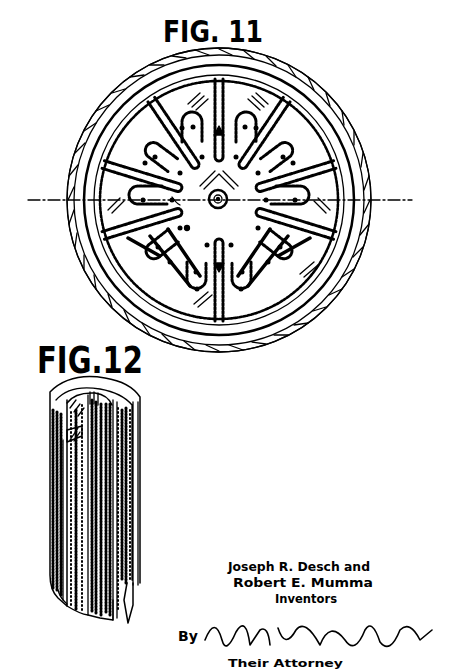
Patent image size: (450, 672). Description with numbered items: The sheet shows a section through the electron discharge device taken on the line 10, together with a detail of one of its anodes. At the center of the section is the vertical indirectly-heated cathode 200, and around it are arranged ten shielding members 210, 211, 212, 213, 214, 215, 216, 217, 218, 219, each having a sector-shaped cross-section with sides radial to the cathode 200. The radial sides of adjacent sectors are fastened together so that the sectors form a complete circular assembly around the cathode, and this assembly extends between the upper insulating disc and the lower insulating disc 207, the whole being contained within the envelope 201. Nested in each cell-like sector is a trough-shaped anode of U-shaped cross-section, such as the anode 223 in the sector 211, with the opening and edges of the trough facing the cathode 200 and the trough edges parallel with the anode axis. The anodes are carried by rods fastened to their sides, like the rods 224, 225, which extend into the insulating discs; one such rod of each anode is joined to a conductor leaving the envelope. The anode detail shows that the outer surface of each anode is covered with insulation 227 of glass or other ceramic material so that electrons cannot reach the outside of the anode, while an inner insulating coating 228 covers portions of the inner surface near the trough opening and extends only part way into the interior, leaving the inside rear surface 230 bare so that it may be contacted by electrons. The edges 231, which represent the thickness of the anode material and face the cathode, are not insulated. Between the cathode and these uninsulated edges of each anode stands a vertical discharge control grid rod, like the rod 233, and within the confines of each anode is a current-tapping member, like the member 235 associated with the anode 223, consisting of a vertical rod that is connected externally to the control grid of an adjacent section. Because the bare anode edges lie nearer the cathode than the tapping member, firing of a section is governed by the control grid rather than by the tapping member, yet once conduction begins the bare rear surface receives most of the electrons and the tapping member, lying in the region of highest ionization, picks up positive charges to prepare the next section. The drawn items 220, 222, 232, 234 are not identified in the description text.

In FIG. 11, the section line 10 is at (44, 210).
In FIG. 11, the cathode 200 is at (233, 185).
In FIG. 11, the envelope 201 is at (360, 258).
In FIG. 12, the envelope 201 is at (0, 495).
In FIG. 11, the lower insulating disc 207 is at (285, 308).
In FIG. 11, the shielding member 210 is at (112, 286).
In FIG. 11, the shielding member 211 is at (86, 277).
In FIG. 11, the shielding member 212 is at (123, 127).
In FIG. 11, the shielding member 213 is at (172, 91).
In FIG. 11, the shielding member 214 is at (275, 91).
In FIG. 11, the shielding member 215 is at (325, 134).
In FIG. 11, the shielding member 216 is at (368, 168).
In FIG. 11, the shielding member 217 is at (354, 282).
In FIG. 11, the shielding member 218 is at (251, 308).
In FIG. 11, the shielding member 219 is at (190, 323).
In FIG. 11, the tube outline 220 is at (208, 323).
In FIG. 11, the radial tube 222 is at (100, 343).
In FIG. 11, the anode 223 is at (110, 174).
In FIG. 11, the support rod 224 is at (107, 158).
In FIG. 12, the support rod 224 is at (117, 384).
In FIG. 11, the support rod 225 is at (135, 186).
In FIG. 12, the support rod 225 is at (67, 443).
In FIG. 12, the outer insulation 227 is at (138, 454).
In FIG. 12, the inner insulating coating 228 is at (130, 618).
In FIG. 12, the inside rear surface 230 is at (67, 398).
In FIG. 12, the anode edges 231 is at (117, 498).
In FIG. 11, the pin 232 is at (189, 228).
In FIG. 11, the grid rod 233 is at (180, 205).
In FIG. 11, the bracket 234 is at (113, 301).
In FIG. 11, the current-tapping member 235 is at (82, 255).